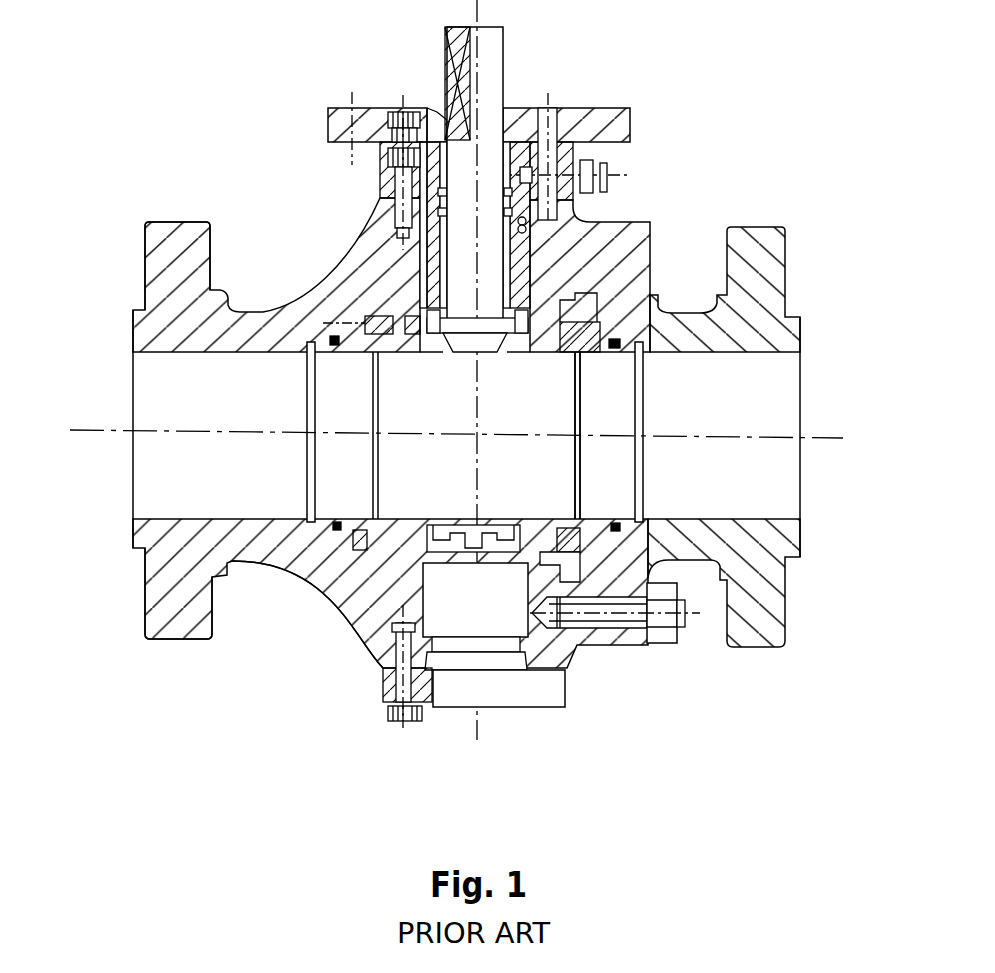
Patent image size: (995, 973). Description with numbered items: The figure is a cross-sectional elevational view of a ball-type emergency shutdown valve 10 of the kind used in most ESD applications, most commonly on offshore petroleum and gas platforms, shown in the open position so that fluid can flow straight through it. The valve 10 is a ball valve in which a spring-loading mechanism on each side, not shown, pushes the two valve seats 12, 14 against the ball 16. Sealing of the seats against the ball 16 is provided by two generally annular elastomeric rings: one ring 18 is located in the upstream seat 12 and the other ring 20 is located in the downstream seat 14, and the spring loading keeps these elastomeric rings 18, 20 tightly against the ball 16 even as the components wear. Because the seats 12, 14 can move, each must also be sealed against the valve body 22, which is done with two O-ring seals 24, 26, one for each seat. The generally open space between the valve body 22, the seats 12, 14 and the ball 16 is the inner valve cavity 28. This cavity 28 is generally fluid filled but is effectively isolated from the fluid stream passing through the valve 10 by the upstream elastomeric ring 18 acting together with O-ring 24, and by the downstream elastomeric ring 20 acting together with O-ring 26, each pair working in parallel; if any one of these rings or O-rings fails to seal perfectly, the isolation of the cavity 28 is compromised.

The valve 10 is at (262, 180).
The upstream seat 12 is at (335, 546).
The downstream seat 14 is at (620, 520).
The ball 16 is at (553, 403).
The upstream elastomeric ring 18 is at (373, 522).
The downstream elastomeric ring 20 is at (580, 520).
The valve body 22 is at (185, 558).
The upstream O-ring seal 24 is at (300, 555).
The downstream O-ring seal 26 is at (645, 518).
The inner valve cavity 28 is at (404, 540).